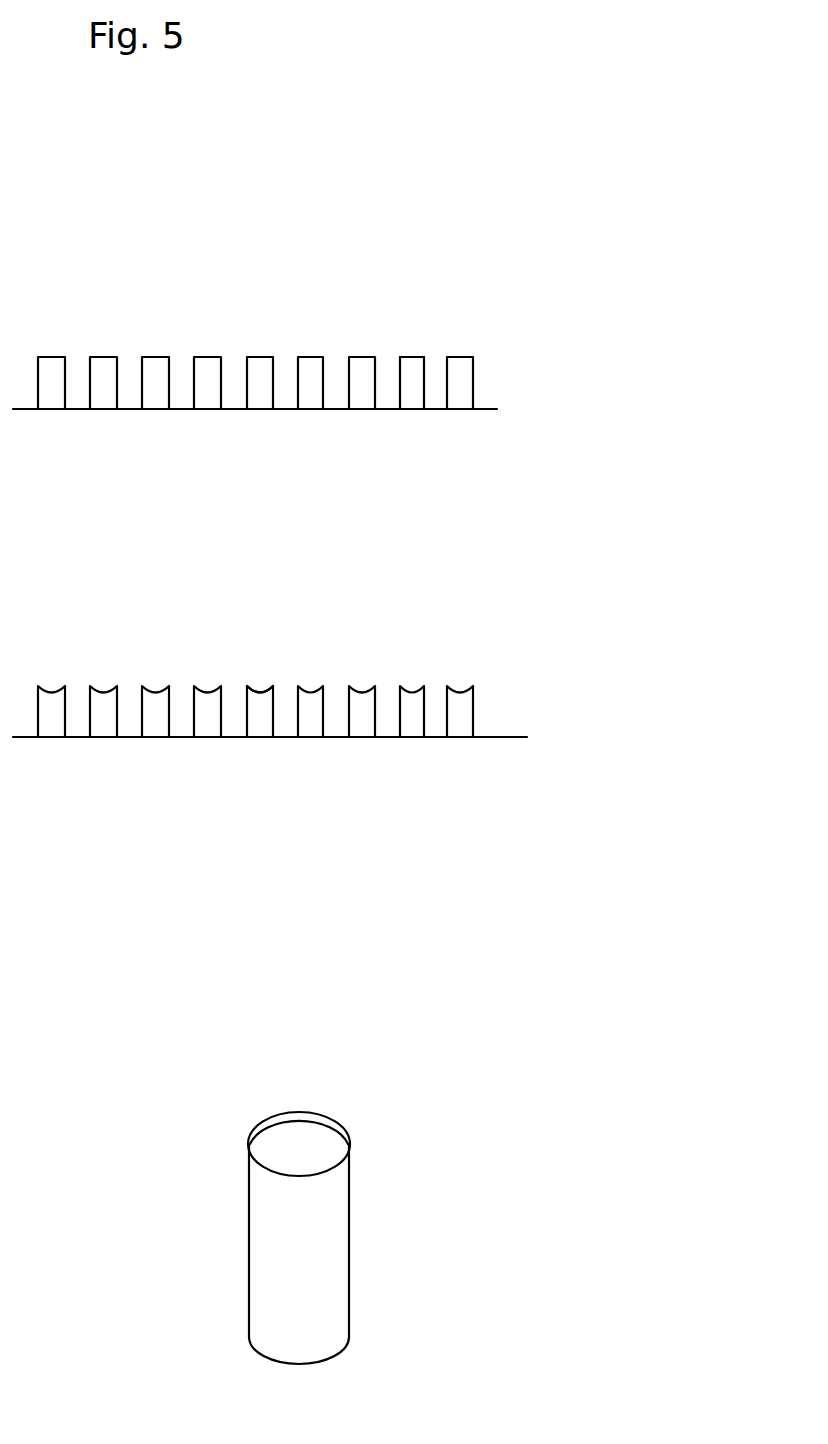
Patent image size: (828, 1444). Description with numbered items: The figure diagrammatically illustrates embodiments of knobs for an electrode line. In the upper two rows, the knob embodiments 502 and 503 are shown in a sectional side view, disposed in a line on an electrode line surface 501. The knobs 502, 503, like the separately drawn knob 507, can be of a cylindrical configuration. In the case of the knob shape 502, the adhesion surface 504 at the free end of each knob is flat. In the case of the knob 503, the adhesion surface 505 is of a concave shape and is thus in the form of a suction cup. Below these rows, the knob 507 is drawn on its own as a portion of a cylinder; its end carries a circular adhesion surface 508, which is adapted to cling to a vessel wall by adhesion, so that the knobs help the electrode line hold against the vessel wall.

The electrode line surface 501 is at (480, 410).
The knob 502 is at (473, 383).
The knob 503 is at (475, 713).
The adhesion surface 504 is at (403, 357).
The adhesion surface 505 is at (252, 688).
The knob 507 is at (352, 1243).
The adhesion surface 508 is at (308, 1145).